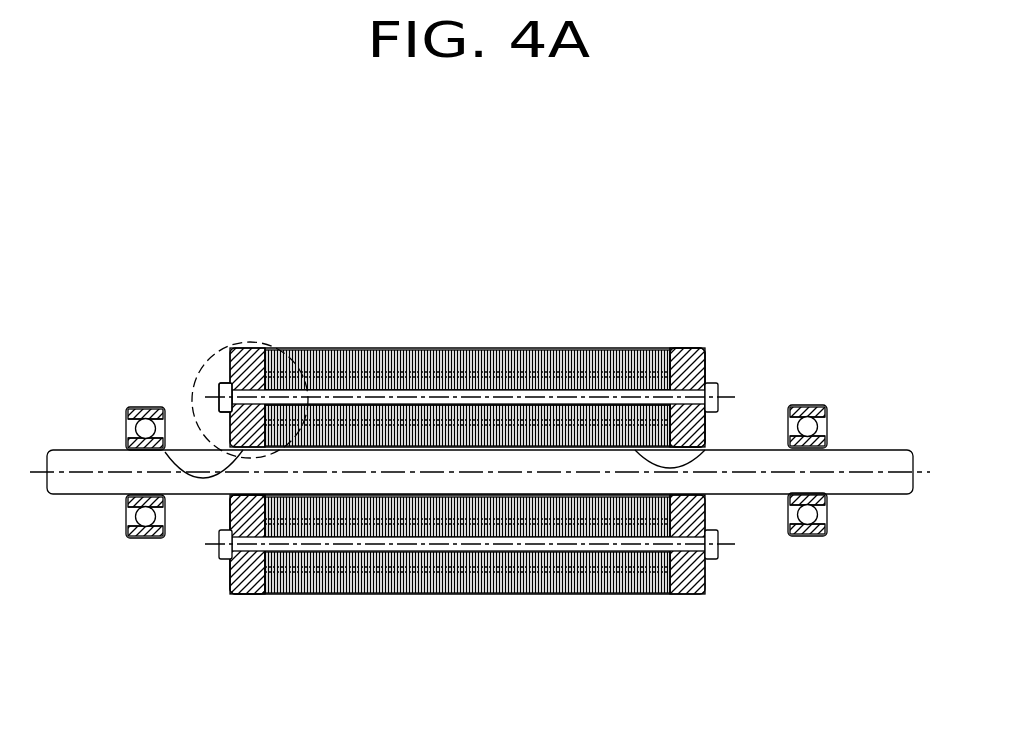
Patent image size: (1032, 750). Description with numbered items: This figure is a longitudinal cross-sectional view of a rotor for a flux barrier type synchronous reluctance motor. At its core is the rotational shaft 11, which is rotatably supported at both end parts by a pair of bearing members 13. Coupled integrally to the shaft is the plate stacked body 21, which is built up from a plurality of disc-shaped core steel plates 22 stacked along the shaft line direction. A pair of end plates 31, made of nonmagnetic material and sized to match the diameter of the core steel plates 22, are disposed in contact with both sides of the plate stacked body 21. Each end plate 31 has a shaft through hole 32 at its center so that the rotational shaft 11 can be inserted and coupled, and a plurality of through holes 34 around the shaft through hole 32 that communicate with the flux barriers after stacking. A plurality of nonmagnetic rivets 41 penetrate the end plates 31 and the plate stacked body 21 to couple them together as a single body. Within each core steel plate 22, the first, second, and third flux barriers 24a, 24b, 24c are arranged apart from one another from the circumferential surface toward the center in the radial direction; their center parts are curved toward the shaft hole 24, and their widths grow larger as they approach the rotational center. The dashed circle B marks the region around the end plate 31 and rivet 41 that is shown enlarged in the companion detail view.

The rotational shaft 11 is at (96, 487).
The bearing member 13 is at (128, 538).
The plate stacked body 21 is at (446, 608).
The core steel plate 22 is at (467, 352).
The shaft hole 24 is at (705, 450).
The first flux barrier 24a is at (440, 360).
The second flux barrier 24b is at (513, 375).
The third flux barrier 24c is at (592, 405).
The end plate 31 is at (688, 350).
The shaft through hole 32 is at (165, 452).
The through hole 34 is at (222, 396).
The rivet 41 is at (216, 394).
The detail region B is at (258, 329).